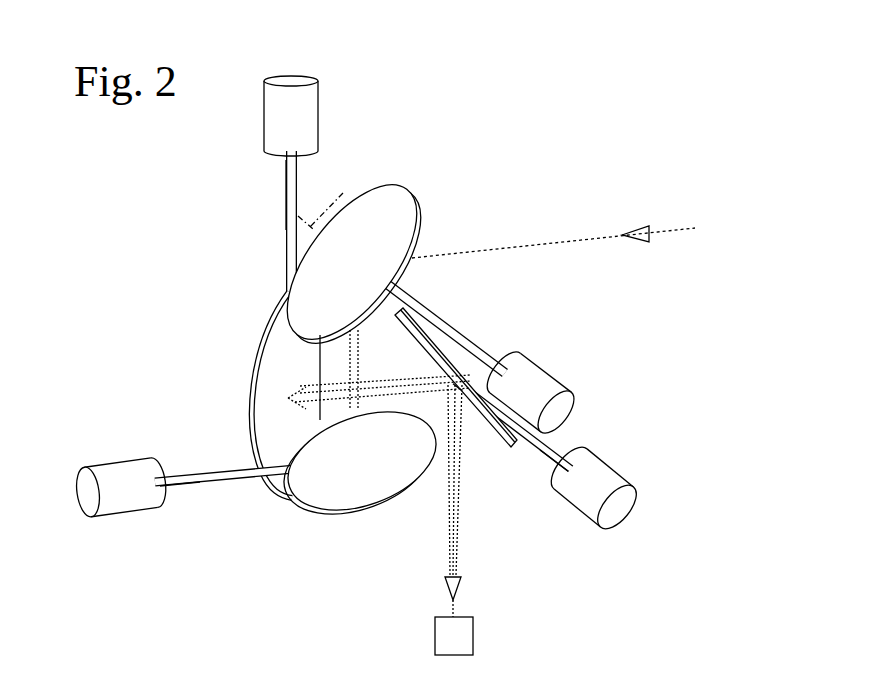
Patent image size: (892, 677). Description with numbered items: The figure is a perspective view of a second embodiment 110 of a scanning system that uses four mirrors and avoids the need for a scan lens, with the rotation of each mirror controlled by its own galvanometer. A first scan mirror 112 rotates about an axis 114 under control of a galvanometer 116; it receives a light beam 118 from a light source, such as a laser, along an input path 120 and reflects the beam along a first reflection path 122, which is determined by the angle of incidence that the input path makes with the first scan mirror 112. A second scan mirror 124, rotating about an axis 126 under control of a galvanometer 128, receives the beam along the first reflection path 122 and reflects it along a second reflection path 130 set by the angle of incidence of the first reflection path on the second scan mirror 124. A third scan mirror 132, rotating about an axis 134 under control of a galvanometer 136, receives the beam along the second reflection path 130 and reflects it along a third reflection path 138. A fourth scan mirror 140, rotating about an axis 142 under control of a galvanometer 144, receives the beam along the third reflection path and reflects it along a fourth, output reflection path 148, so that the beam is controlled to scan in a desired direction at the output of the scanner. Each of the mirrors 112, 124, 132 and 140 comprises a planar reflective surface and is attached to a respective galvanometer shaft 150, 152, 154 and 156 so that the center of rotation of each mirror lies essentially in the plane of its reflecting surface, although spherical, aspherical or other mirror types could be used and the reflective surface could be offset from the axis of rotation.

The second embodiment 110 is at (593, 140).
The first scan mirror 112 is at (411, 195).
The axis 114 is at (332, 196).
The galvanometer 116 is at (549, 378).
The light beam 118 is at (584, 243).
The input path 120 is at (497, 250).
The first reflection path 122 is at (357, 335).
The second scan mirror 124 is at (368, 493).
The axis 126 is at (232, 490).
The galvanometer 128 is at (124, 458).
The second reflection path 130 is at (333, 402).
The third scan mirror 132 is at (256, 418).
The axis 134 is at (287, 242).
The galvanometer 136 is at (318, 118).
The third reflection path 138 is at (403, 407).
The fourth scan mirror 140 is at (486, 418).
The axis 142 is at (537, 448).
The galvanometer 144 is at (586, 504).
The output reflection path 148 is at (461, 546).
The galvanometer shaft 150 is at (440, 322).
The galvanometer shaft 152 is at (176, 493).
The galvanometer shaft 154 is at (287, 190).
The galvanometer shaft 156 is at (565, 458).